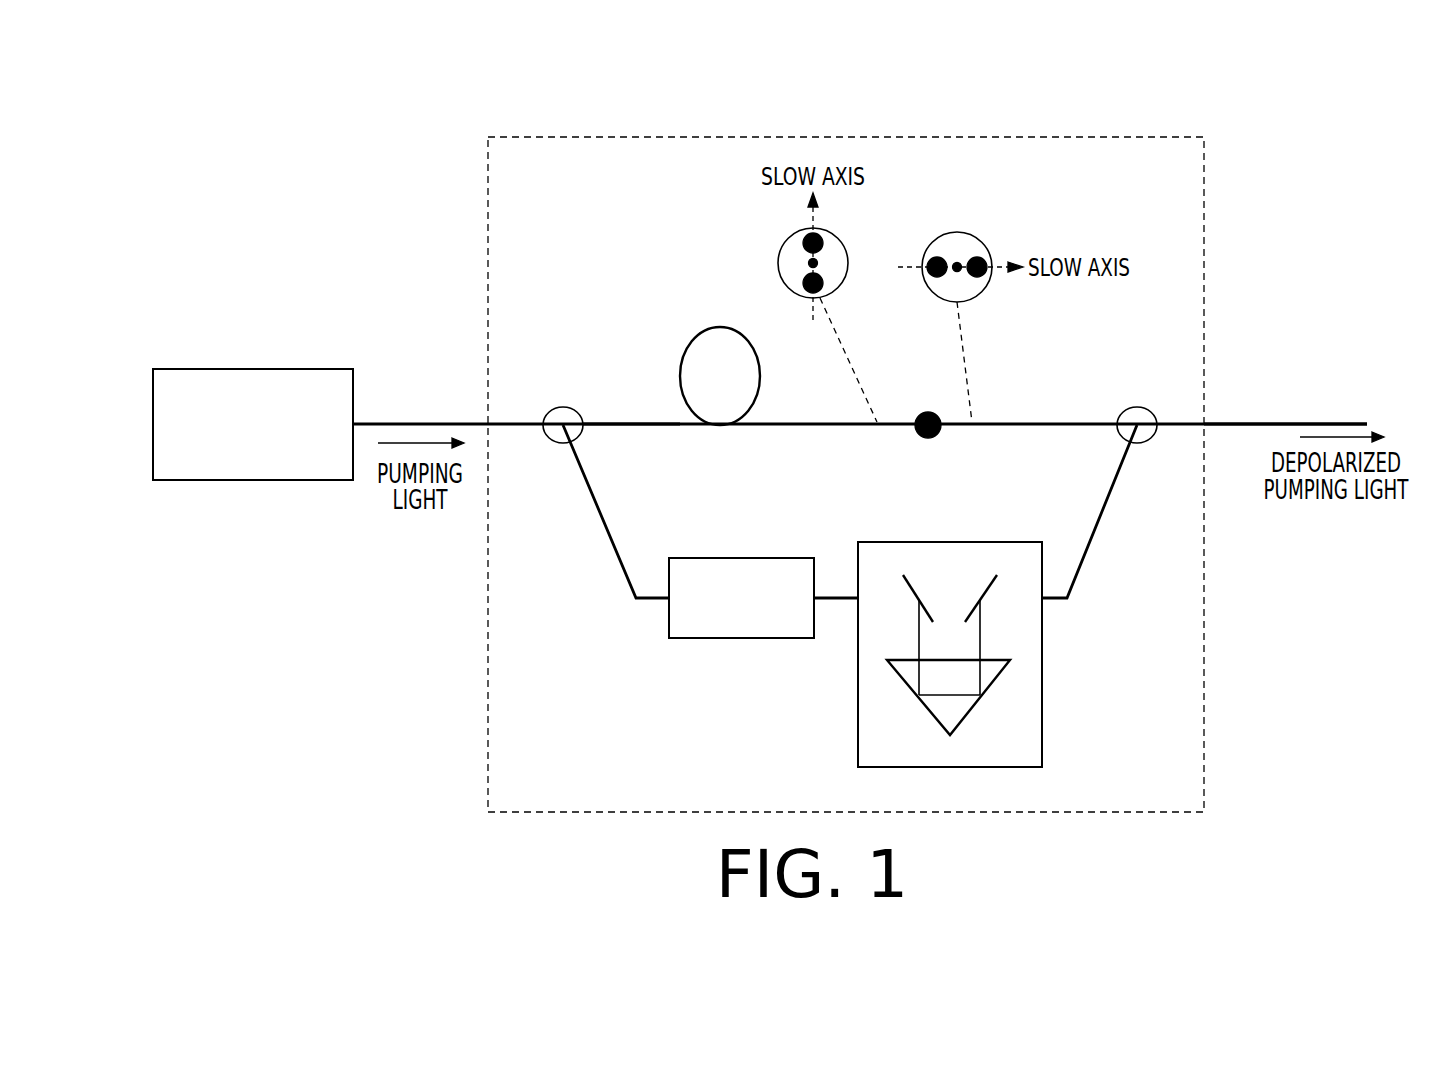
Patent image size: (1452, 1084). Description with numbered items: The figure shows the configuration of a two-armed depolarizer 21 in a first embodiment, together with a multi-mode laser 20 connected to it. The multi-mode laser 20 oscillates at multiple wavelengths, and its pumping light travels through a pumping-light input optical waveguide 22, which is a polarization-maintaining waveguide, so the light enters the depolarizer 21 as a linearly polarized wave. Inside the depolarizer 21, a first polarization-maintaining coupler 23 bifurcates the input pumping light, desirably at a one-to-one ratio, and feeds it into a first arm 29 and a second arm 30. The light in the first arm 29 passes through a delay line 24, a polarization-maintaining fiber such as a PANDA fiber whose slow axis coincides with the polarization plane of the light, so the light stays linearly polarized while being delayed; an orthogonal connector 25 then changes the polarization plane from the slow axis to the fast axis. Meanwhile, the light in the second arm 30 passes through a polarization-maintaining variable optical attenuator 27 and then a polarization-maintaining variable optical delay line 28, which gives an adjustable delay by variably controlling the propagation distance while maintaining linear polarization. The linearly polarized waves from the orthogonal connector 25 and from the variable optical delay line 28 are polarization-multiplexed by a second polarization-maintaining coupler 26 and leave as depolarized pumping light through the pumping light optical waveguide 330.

The multi-mode laser 20 is at (297, 367).
The depolarizer 21 is at (1140, 132).
The pumping-light input optical waveguide 22 is at (433, 420).
The first polarization-maintaining coupler 23 is at (563, 407).
The delay line 24 is at (721, 326).
The orthogonal connector 25 is at (926, 440).
The second polarization-maintaining coupler 26 is at (1137, 407).
The polarization-maintaining variable optical attenuator 27 is at (748, 558).
The polarization-maintaining variable optical delay line 28 is at (976, 541).
The first arm 29 is at (627, 420).
The second arm 30 is at (609, 555).
The pumping light optical waveguide 330 is at (1278, 420).